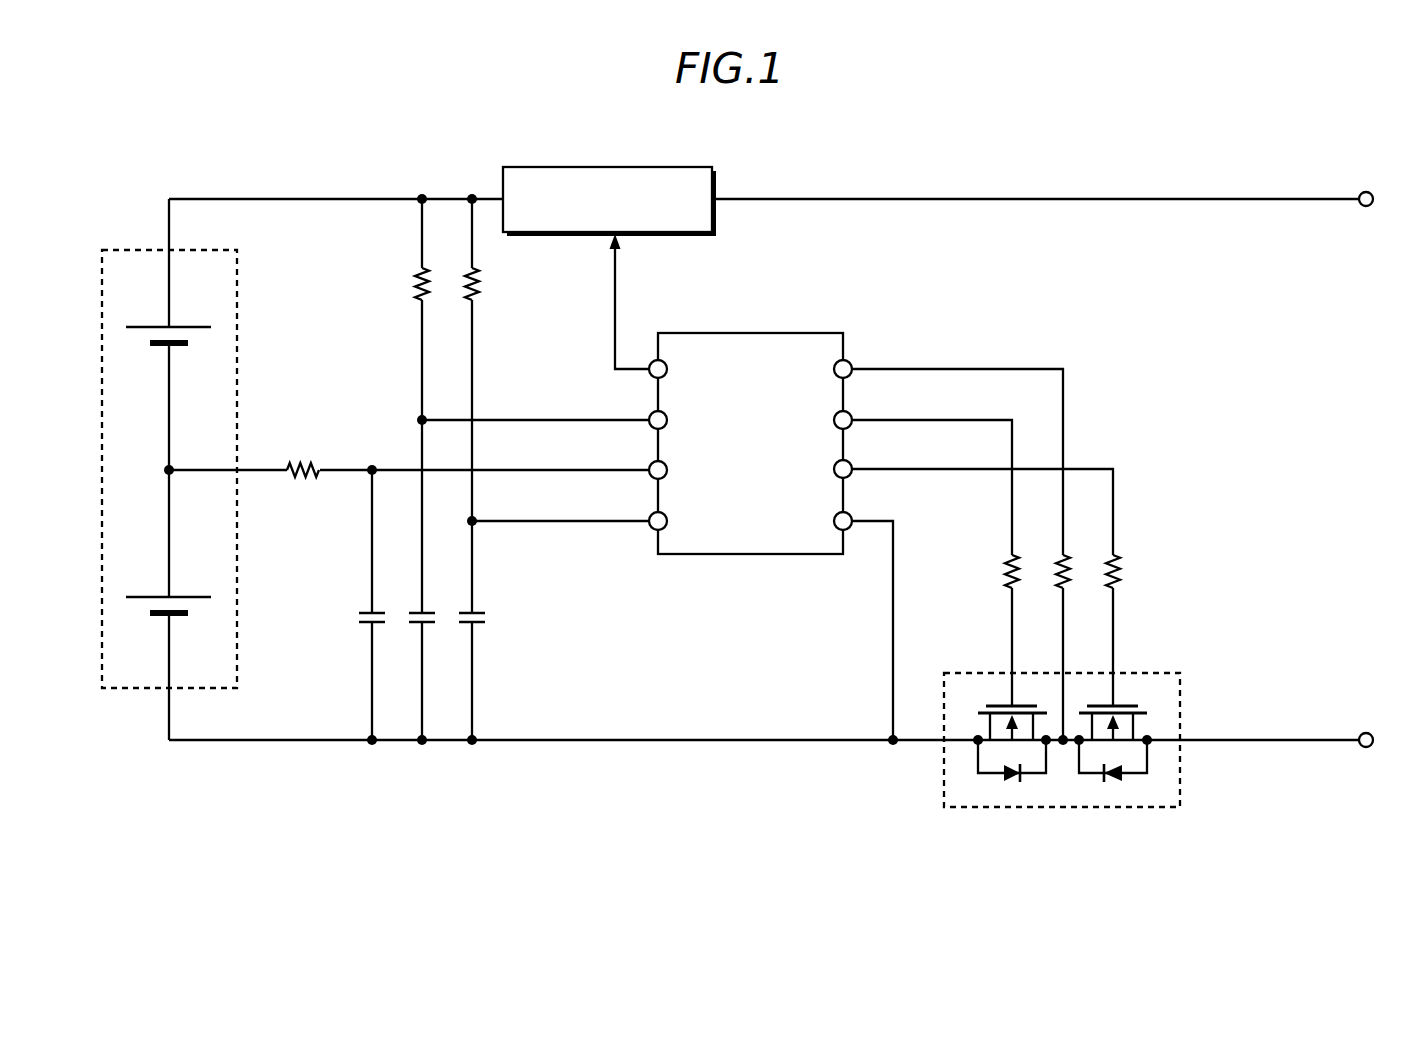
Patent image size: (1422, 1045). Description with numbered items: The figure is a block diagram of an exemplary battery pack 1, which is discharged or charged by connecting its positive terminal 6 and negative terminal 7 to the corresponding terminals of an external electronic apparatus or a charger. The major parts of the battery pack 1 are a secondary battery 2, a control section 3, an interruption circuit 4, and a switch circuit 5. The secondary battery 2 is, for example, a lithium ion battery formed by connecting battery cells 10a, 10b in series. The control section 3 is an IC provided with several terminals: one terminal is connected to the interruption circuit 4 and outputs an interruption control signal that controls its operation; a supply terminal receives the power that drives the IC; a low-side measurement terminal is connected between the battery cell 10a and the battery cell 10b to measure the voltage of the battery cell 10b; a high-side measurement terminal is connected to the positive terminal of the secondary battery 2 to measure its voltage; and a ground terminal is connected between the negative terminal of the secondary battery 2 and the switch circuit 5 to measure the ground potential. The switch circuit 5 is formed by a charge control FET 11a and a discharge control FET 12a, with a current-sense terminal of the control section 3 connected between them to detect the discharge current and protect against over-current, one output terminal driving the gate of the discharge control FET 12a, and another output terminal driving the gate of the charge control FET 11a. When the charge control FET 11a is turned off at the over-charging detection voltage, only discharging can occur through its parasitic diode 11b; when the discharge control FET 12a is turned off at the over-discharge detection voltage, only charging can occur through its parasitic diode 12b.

The battery pack 1 is at (1295, 118).
The secondary battery 2 is at (209, 469).
The control section 3 is at (799, 333).
The interruption circuit 4 is at (612, 164).
The switch circuit 5 is at (1096, 745).
The positive terminal 6 is at (1369, 191).
The negative terminal 7 is at (1369, 733).
The battery cell 10a is at (203, 332).
The battery cell 10b is at (203, 602).
The charge control FET 11a is at (1130, 706).
The parasitic diode 11b is at (1118, 782).
The discharge control FET 12a is at (993, 702).
The parasitic diode 12b is at (1016, 782).